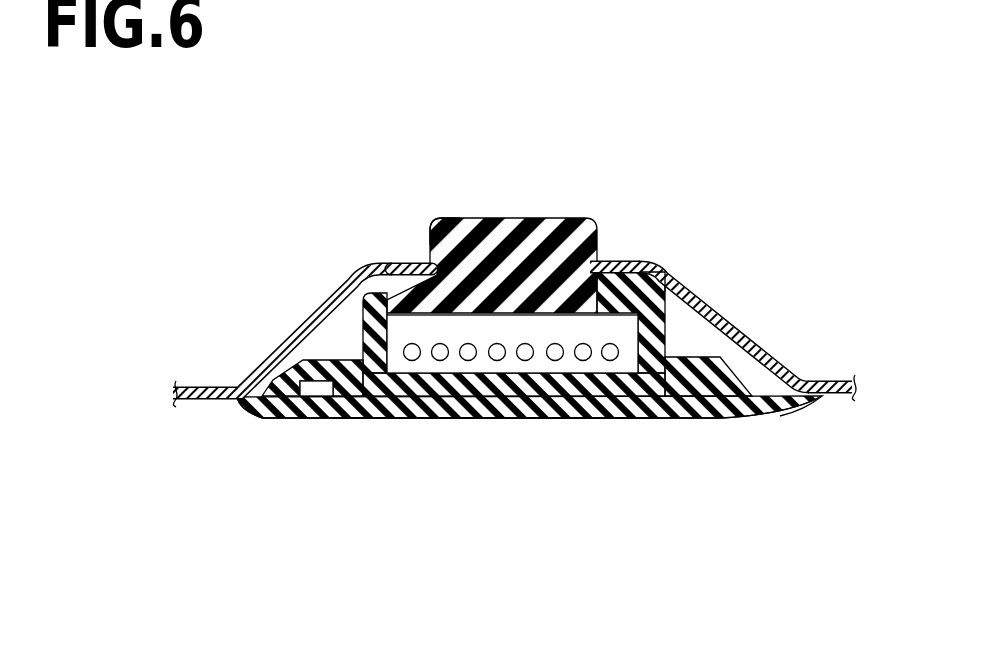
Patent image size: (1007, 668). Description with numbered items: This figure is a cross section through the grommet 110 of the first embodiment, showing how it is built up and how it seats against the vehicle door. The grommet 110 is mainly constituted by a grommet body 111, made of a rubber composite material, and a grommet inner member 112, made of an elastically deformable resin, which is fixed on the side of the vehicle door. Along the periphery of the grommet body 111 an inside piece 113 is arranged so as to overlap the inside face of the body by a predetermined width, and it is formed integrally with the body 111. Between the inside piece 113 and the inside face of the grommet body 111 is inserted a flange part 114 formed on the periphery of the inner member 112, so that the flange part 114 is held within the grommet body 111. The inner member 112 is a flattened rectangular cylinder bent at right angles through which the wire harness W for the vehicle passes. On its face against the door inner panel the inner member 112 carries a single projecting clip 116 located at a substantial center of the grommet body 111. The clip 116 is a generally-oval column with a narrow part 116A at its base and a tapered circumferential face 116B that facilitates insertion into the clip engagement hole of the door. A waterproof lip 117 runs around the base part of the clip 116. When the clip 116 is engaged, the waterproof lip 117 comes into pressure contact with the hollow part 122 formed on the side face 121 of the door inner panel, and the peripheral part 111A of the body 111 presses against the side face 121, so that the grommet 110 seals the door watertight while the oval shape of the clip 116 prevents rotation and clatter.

The grommet 110 is at (447, 421).
The grommet body 111 is at (690, 421).
The peripheral part 111A is at (243, 420).
The grommet inner member 112 is at (673, 327).
The inside piece 113 is at (360, 323).
The flange part 114 is at (333, 419).
The clip 116 is at (530, 233).
The narrow part 116A is at (437, 266).
The tapered circumferential face 116B is at (432, 236).
The waterproof lip 117 is at (612, 272).
The side face 121 is at (790, 375).
The hollow part 122 is at (670, 294).
The wire harness W is at (583, 362).